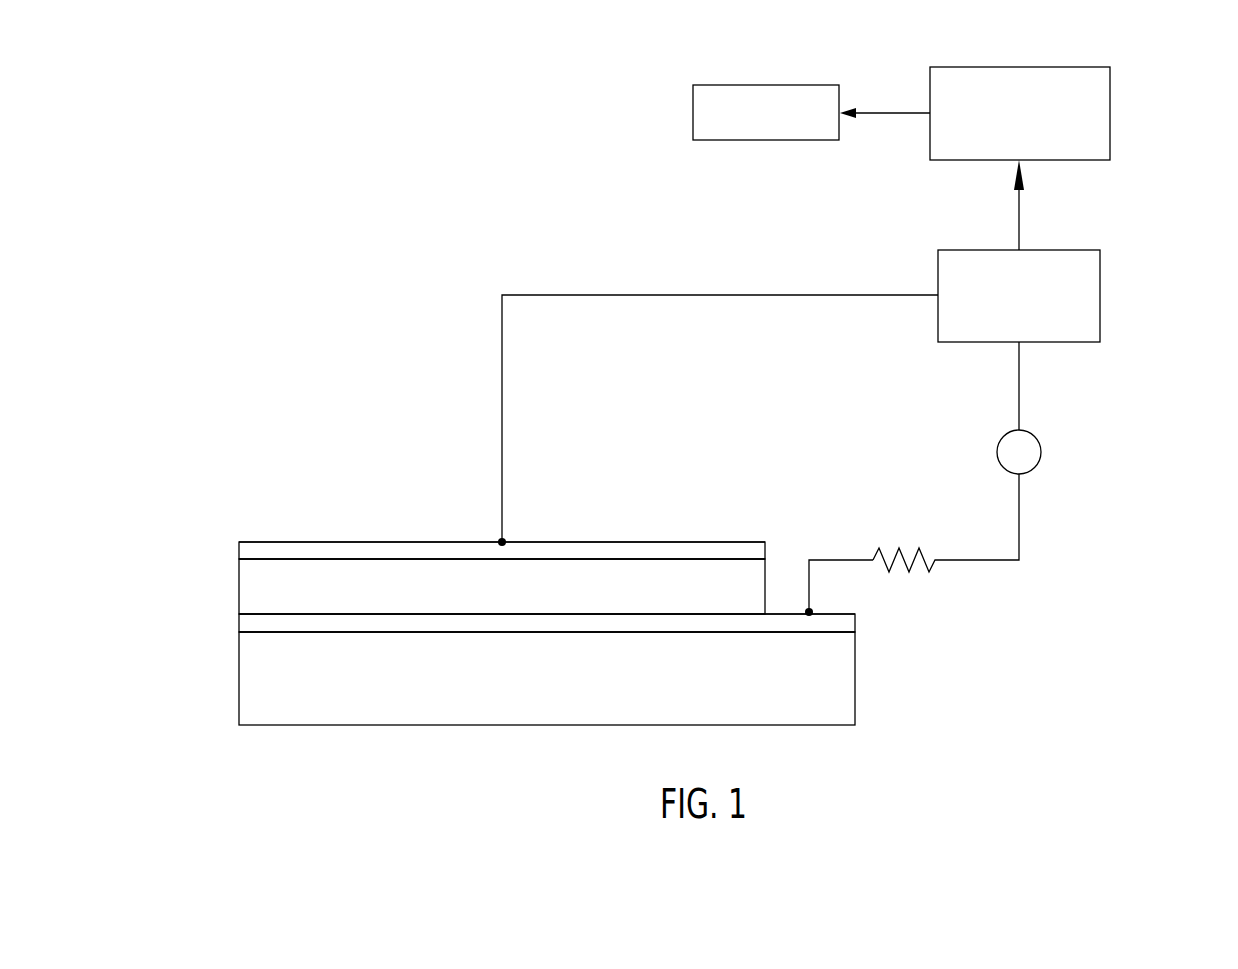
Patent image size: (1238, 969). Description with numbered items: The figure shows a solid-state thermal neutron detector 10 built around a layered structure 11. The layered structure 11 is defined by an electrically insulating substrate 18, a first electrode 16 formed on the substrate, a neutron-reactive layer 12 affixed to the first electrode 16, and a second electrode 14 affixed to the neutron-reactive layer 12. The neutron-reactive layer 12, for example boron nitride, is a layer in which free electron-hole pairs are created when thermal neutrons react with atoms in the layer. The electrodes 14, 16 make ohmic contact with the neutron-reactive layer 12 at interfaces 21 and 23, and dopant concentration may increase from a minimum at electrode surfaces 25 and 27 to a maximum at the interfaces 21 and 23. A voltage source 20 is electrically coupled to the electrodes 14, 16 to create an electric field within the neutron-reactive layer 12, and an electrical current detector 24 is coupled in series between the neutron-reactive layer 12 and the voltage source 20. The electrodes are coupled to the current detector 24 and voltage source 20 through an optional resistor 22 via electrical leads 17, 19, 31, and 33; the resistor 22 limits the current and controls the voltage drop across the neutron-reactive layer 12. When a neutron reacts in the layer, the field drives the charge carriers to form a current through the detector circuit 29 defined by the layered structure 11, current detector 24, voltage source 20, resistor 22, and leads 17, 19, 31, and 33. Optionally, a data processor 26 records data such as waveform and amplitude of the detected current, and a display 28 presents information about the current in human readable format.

The thermal neutron detector 10 is at (440, 154).
The layered structure 11 is at (167, 528).
The neutron-reactive layer 12 is at (239, 588).
The second electrode 14 is at (239, 553).
The first electrode 16 is at (239, 623).
The electrical lead 17 is at (502, 363).
The electrically insulating substrate 18 is at (239, 660).
The electrical lead 19 is at (833, 560).
The voltage source 20 is at (1041, 452).
The interface 21 is at (598, 559).
The resistor 22 is at (907, 574).
The interface 23 is at (670, 614).
The current detector 24 is at (963, 250).
The electrode surface 25 is at (363, 542).
The data processor 26 is at (1013, 67).
The electrode surface 27 is at (348, 633).
The display 28 is at (765, 85).
The detector circuit 29 is at (1118, 240).
The electrical lead 31 is at (1020, 392).
The electrical lead 33 is at (1020, 508).